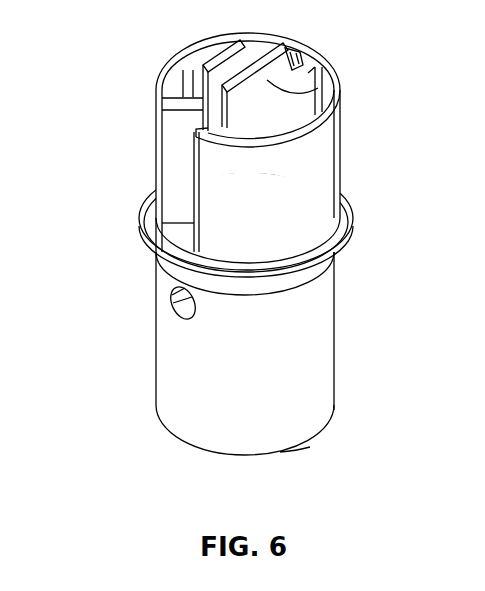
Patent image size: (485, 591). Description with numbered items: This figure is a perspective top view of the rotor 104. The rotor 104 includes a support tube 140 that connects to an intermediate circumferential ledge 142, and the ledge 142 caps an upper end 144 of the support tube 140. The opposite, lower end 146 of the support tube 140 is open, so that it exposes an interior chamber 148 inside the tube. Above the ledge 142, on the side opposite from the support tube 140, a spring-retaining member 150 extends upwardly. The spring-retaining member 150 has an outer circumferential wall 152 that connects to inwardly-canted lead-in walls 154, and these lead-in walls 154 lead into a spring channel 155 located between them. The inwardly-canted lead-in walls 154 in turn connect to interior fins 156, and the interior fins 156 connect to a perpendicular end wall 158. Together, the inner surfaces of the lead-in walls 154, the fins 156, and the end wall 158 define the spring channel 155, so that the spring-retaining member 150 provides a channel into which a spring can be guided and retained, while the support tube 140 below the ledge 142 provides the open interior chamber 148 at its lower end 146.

The rotor 104 is at (116, 43).
The support tube 140 is at (327, 360).
The intermediate circumferential ledge 142 is at (355, 228).
The upper end 144 is at (320, 278).
The lower end 146 is at (320, 402).
The interior chamber 148 is at (292, 448).
The spring-retaining member 150 is at (340, 133).
The outer circumferential wall 152 is at (320, 177).
The inwardly-canted lead-in walls 154 is at (177, 150).
The spring channel 155 is at (168, 173).
The interior fins 156 is at (228, 47).
The perpendicular end wall 158 is at (281, 56).